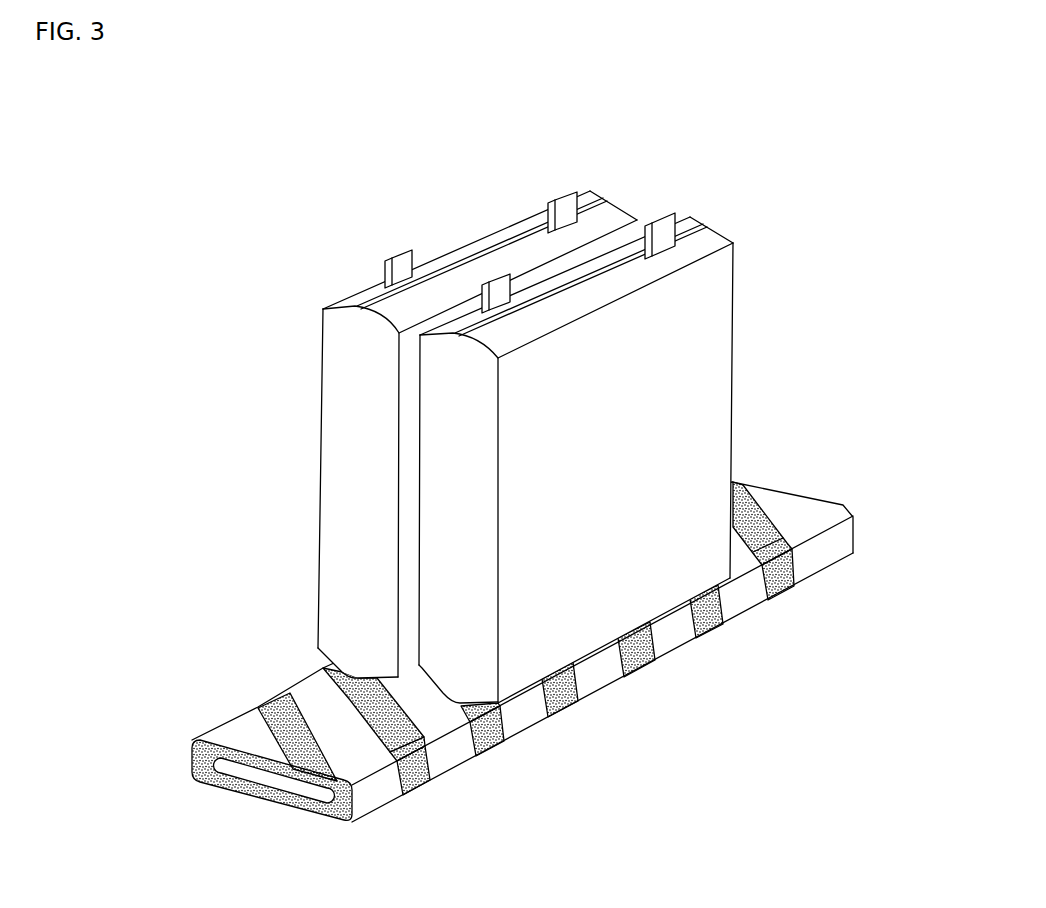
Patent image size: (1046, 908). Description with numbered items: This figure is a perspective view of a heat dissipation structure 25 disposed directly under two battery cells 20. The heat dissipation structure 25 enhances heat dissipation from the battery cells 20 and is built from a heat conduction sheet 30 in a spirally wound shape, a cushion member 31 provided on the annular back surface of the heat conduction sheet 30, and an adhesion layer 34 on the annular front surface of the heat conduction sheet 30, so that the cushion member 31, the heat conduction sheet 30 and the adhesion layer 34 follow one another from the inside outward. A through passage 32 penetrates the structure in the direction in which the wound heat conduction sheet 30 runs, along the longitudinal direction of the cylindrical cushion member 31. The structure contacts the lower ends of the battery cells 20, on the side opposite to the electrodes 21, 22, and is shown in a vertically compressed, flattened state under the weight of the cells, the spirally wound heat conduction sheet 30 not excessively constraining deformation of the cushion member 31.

The battery cell 20 is at (343, 436).
The electrode 21 is at (396, 258).
The electrode 22 is at (570, 196).
The heat dissipation structure 25 is at (501, 471).
The heat conduction sheet 30 is at (480, 659).
The cushion member 31 is at (212, 760).
The through passage 32 is at (262, 777).
The adhesion layer 34 is at (313, 686).